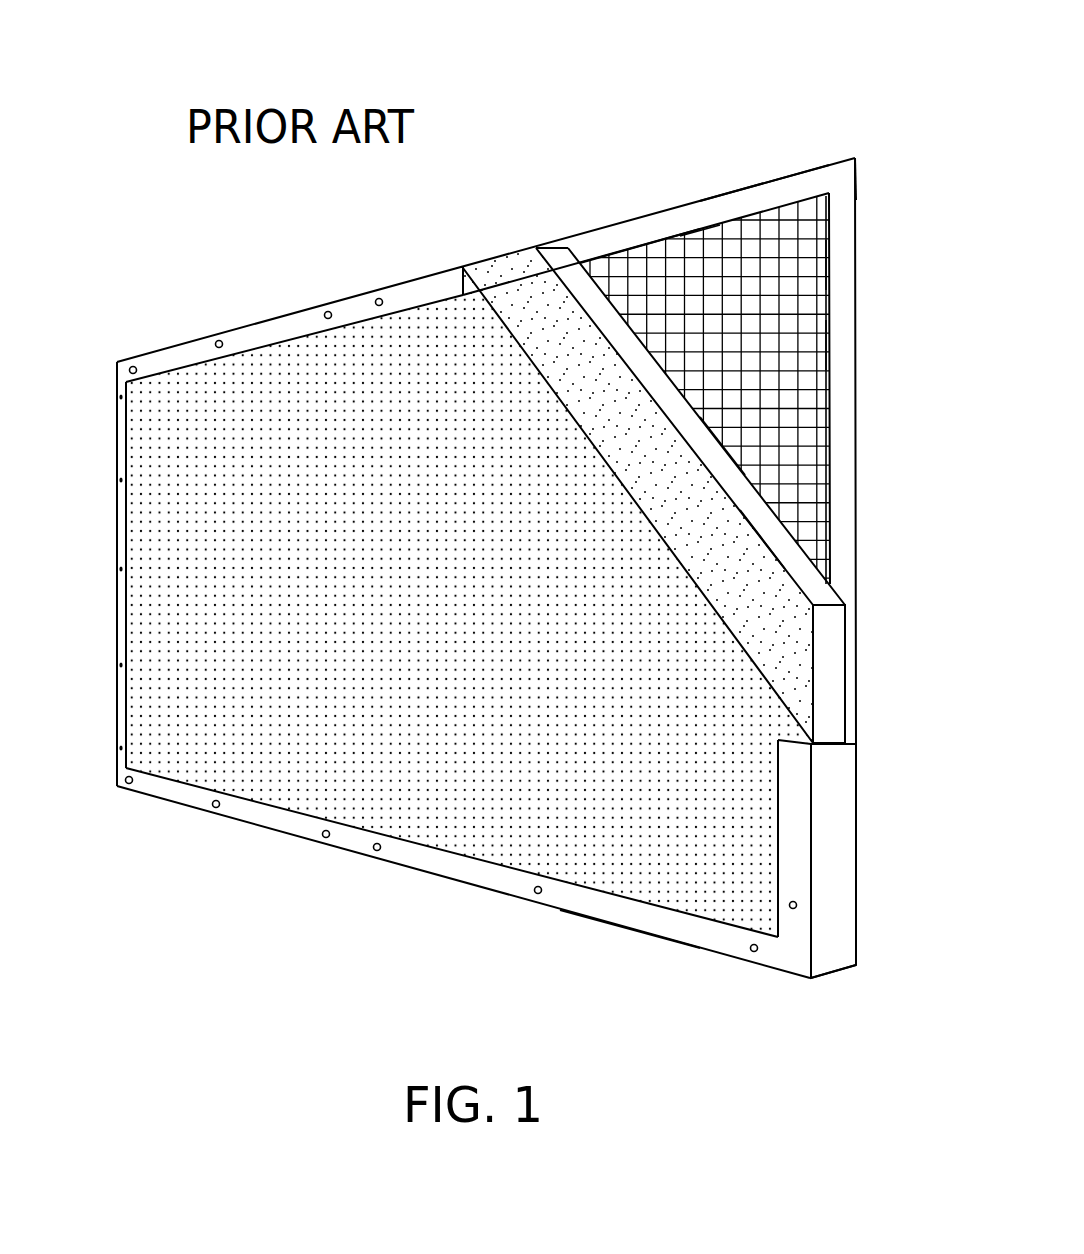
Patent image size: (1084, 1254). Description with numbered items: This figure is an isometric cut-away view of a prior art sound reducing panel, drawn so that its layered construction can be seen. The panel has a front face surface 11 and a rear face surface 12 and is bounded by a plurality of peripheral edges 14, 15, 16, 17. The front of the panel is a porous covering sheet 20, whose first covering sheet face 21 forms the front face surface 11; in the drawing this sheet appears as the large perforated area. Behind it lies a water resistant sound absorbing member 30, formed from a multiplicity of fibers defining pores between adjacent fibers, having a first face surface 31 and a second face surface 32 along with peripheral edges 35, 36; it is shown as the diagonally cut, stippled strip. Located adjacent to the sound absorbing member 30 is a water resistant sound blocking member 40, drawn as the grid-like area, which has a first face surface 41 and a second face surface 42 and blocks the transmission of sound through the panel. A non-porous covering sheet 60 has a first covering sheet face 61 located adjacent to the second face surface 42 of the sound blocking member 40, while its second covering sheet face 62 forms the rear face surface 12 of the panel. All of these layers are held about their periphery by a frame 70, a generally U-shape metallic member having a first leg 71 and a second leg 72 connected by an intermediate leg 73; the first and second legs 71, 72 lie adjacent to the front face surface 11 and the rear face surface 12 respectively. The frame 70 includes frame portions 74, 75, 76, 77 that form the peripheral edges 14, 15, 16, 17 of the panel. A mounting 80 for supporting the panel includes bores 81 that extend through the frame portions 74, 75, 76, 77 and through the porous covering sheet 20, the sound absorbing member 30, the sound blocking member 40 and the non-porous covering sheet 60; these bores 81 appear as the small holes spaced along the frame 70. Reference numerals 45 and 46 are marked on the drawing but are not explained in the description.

The front face surface 11 is at (623, 867).
The rear face surface 12 is at (860, 850).
The peripheral edge 14 is at (463, 868).
The peripheral edge 15 is at (842, 777).
The peripheral edge 16 is at (237, 330).
The peripheral edge 17 is at (117, 603).
The porous covering sheet 20 is at (307, 789).
The first covering sheet face 21 is at (158, 695).
The water resistant sound absorbing member 30 is at (715, 497).
The first face surface 31 is at (757, 553).
The second face surface 32 is at (733, 458).
The peripheral edge 35 is at (837, 640).
The peripheral edge 36 is at (551, 247).
The water resistant sound blocking member 40 is at (817, 287).
The first face surface 41 is at (695, 243).
The second face surface 42 is at (830, 263).
The mesh side member 45 is at (830, 343).
The top rail lower edge 46 is at (632, 245).
The non-porous covering sheet 60 is at (848, 207).
The first covering sheet face 61 is at (762, 192).
The second covering sheet face 62 is at (858, 173).
The frame 70 is at (412, 855).
The first leg 71 is at (160, 789).
The second leg 72 is at (860, 817).
The intermediate leg 73 is at (845, 940).
The frame portion 74 is at (522, 888).
The frame portion 75 is at (802, 847).
The frame portion 76 is at (352, 303).
The frame portion 77 is at (117, 487).
The mounting 80 is at (216, 804).
The bore 81 is at (754, 953).